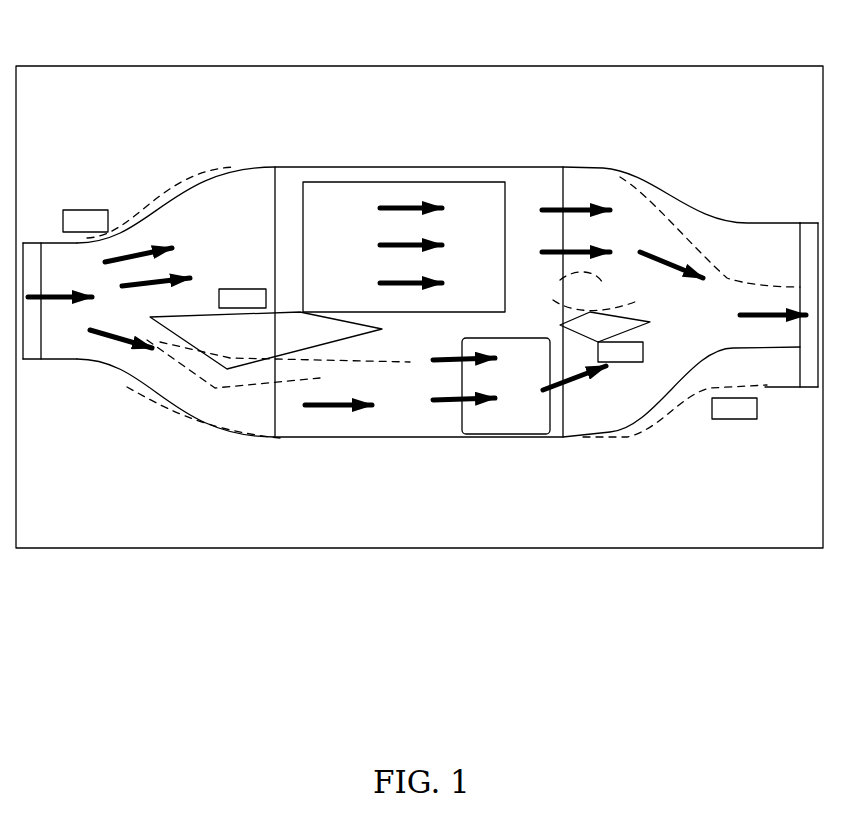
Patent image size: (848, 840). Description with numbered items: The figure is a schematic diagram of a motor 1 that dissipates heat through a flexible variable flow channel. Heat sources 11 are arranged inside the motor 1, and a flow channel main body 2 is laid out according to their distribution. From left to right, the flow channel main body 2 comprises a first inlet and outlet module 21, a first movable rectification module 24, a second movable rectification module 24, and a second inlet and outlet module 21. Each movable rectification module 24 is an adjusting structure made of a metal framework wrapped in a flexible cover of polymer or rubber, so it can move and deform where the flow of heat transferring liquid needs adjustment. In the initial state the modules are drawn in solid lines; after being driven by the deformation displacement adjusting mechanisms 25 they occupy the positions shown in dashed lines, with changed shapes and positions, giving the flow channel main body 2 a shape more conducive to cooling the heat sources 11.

The motor 1 is at (298, 80).
The flow channel main body 2 is at (313, 436).
The heat source 11 is at (517, 350).
The inlet and outlet module 21 is at (30, 340).
The movable rectification module 24 is at (212, 337).
The deformation displacement adjusting mechanism 25 is at (628, 357).